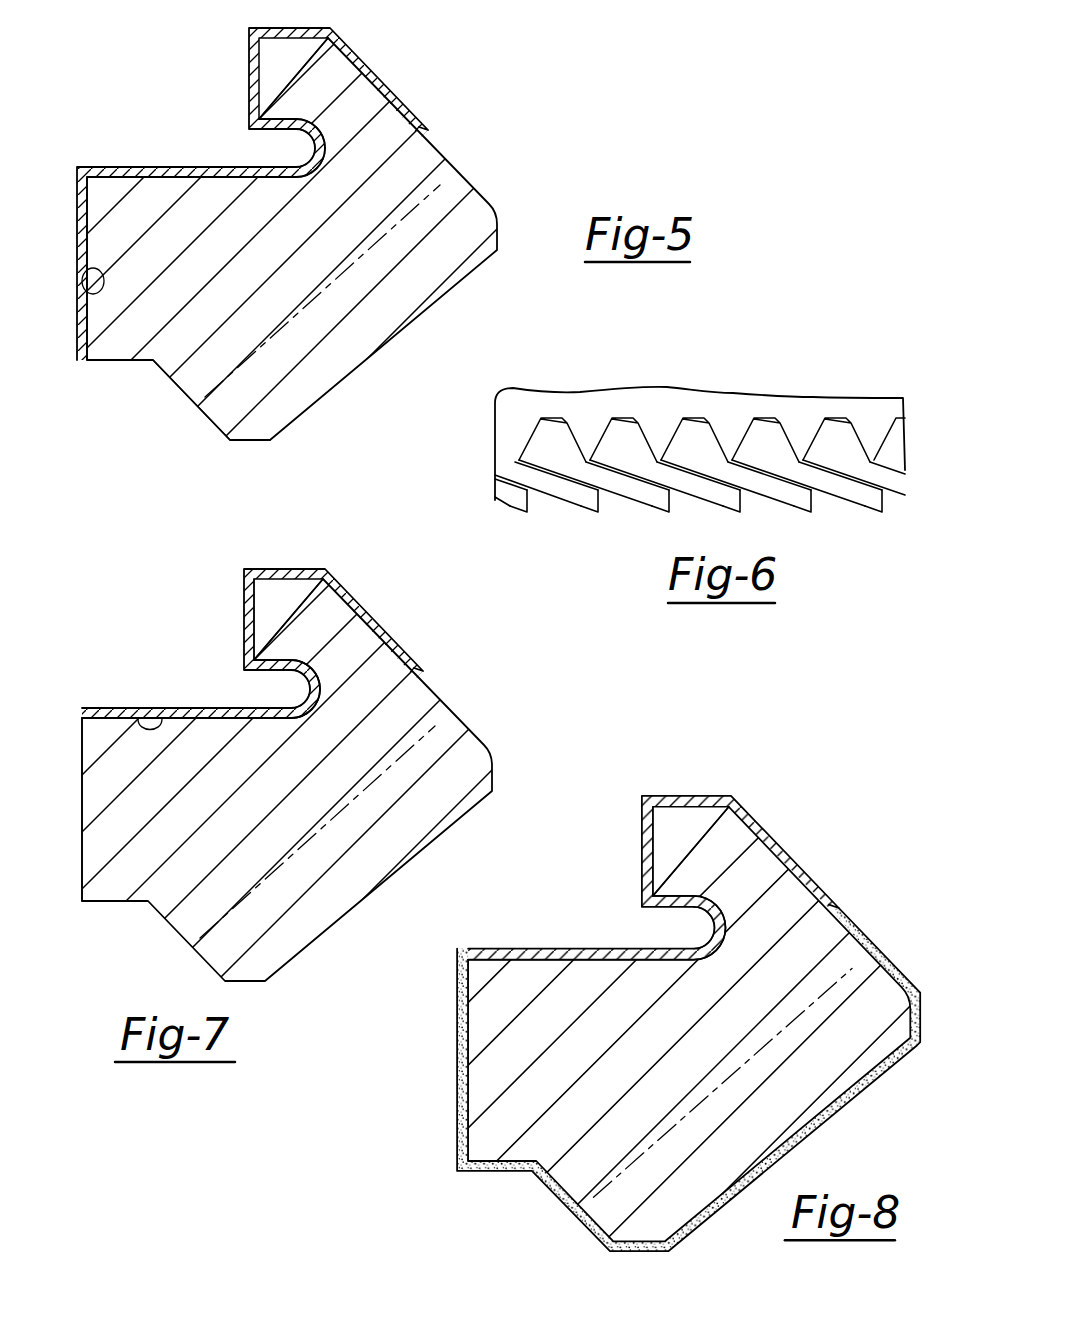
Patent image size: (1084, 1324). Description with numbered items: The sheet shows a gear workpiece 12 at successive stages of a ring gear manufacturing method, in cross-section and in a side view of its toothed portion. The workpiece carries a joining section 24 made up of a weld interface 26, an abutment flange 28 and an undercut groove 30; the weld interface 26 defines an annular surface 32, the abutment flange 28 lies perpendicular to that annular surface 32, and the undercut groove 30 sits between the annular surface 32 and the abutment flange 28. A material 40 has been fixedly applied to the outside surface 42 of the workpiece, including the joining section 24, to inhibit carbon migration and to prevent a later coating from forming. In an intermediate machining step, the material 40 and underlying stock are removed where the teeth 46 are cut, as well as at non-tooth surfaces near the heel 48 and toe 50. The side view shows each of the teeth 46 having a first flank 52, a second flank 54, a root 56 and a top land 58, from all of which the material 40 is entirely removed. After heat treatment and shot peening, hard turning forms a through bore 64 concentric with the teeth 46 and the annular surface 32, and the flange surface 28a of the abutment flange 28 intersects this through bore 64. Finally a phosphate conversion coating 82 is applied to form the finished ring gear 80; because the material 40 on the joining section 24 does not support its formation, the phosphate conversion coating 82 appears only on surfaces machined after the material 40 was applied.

In FIG. 5, the gear workpiece 12 is at (363, 252).
In FIG. 7, the gear workpiece 12 is at (360, 768).
In FIG. 5, the joining section 24 is at (205, 120).
In FIG. 7, the joining section 24 is at (226, 652).
In FIG. 8, the joining section 24 is at (627, 890).
In FIG. 5, the weld interface 26 is at (296, 68).
In FIG. 7, the weld interface 26 is at (328, 598).
In FIG. 8, the weld interface 26 is at (726, 831).
In FIG. 7, the abutment flange 28 is at (360, 771).
In FIG. 8, the abutment flange 28 is at (642, 1018).
In FIG. 7, the flange surface 28a is at (186, 769).
In FIG. 8, the flange surface 28a is at (581, 1010).
In FIG. 7, the undercut groove 30 is at (340, 689).
In FIG. 7, the annular surface 32 is at (293, 619).
In FIG. 8, the annular surface 32 is at (691, 851).
In FIG. 5, the material 40 is at (76, 248).
In FIG. 7, the material 40 is at (252, 643).
In FIG. 8, the material 40 is at (653, 878).
In FIG. 5, the outside surface 42 is at (84, 290).
In FIG. 7, the outside surface 42 is at (151, 691).
In FIG. 5, the teeth 46 is at (373, 314).
In FIG. 6, the teeth 46 is at (802, 455).
In FIG. 7, the teeth 46 is at (359, 832).
In FIG. 8, the teeth 46 is at (756, 1083).
In FIG. 5, the heel 48 is at (465, 228).
In FIG. 5, the toe 50 is at (222, 403).
In FIG. 6, the first flank 52 is at (573, 450).
In FIG. 6, the second flank 54 is at (605, 448).
In FIG. 6, the root 56 is at (626, 436).
In FIG. 6, the top land 58 is at (777, 500).
In FIG. 7, the through bore 64 is at (70, 841).
In FIG. 8, the through bore 64 is at (505, 1060).
In FIG. 8, the finished ring gear 80 is at (642, 1018).
In FIG. 8, the phosphate conversion coating 82 is at (688, 1079).